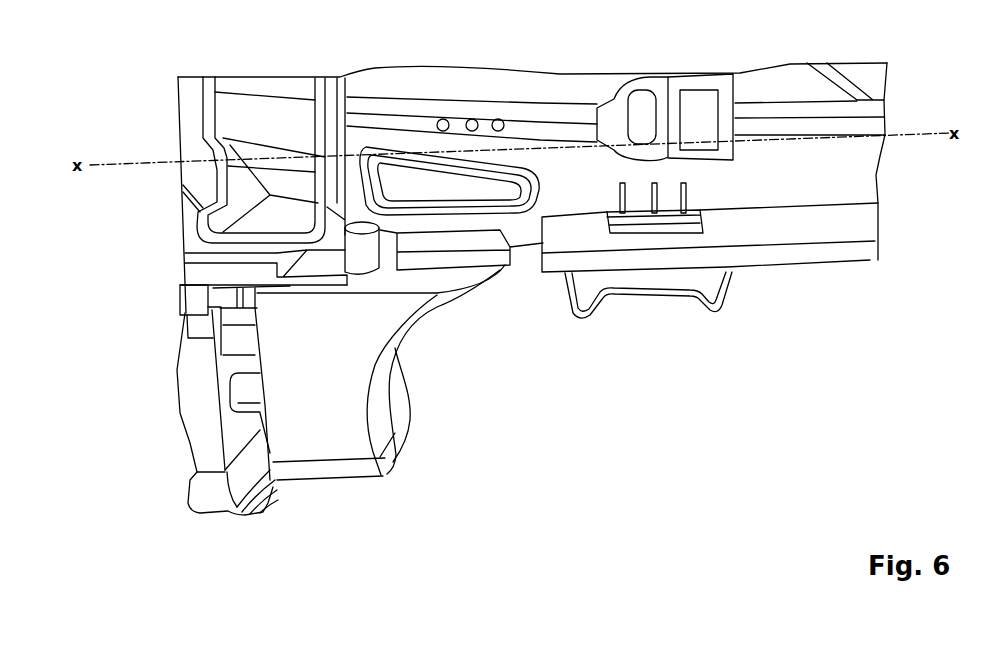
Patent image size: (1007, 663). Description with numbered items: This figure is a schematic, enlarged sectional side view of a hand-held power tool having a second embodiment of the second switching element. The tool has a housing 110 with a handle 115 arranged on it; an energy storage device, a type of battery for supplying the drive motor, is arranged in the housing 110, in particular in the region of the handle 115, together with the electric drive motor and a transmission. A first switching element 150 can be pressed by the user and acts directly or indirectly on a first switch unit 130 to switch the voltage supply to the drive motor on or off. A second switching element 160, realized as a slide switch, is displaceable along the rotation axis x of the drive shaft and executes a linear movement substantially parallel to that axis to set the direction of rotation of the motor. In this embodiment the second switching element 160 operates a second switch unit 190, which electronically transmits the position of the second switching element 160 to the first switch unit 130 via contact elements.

The housing 110 is at (837, 252).
The handle 115 is at (266, 513).
The first switch unit 130 is at (195, 374).
The first switching element 150 is at (335, 453).
The second switching element 160 is at (677, 280).
The second switch unit 190 is at (665, 218).